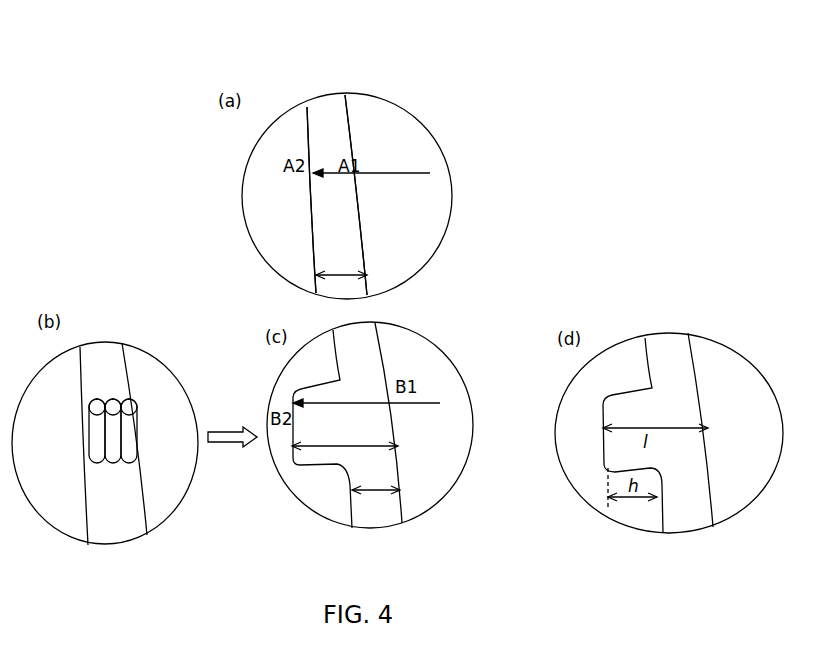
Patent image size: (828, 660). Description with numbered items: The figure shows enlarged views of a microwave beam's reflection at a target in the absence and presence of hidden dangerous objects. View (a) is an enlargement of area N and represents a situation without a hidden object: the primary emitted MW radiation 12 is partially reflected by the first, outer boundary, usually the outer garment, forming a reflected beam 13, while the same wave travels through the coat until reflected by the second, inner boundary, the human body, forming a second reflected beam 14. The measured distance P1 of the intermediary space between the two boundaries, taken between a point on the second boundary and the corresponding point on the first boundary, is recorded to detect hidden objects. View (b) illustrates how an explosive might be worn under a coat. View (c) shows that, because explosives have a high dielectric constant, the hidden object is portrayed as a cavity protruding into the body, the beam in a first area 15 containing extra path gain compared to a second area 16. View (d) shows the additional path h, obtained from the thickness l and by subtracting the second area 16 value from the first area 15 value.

The primary emitted MW radiation 12 is at (371, 166).
The reflected beam 13 is at (362, 173).
The second reflected beam 14 is at (316, 174).
The first area 15 is at (345, 438).
The second area 16 is at (376, 499).
The area N is at (405, 110).
The measured distance P1 is at (347, 273).